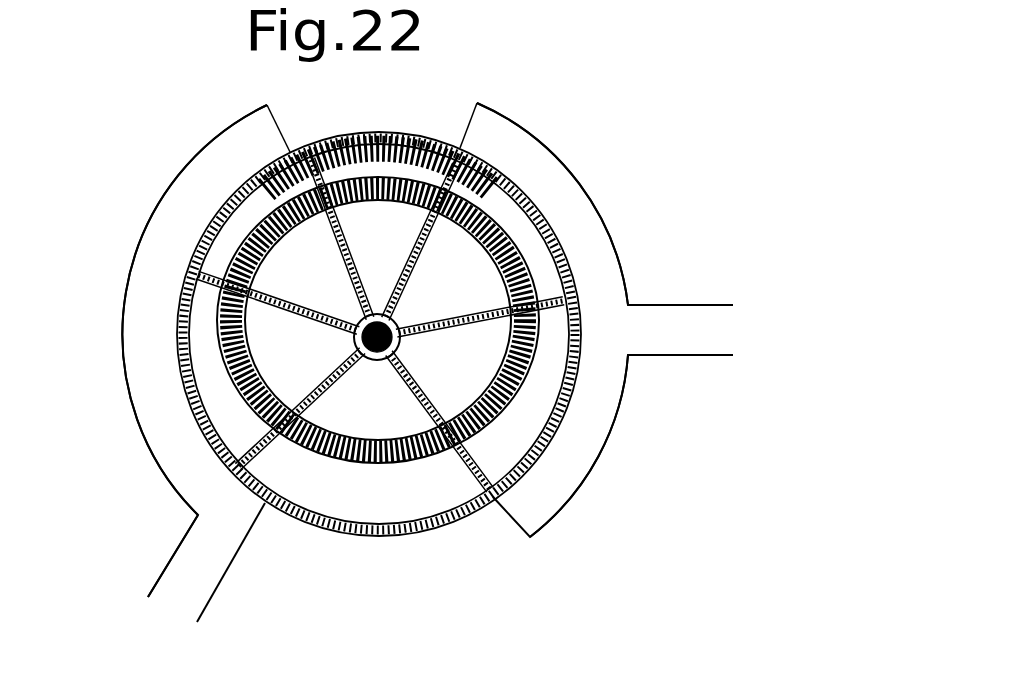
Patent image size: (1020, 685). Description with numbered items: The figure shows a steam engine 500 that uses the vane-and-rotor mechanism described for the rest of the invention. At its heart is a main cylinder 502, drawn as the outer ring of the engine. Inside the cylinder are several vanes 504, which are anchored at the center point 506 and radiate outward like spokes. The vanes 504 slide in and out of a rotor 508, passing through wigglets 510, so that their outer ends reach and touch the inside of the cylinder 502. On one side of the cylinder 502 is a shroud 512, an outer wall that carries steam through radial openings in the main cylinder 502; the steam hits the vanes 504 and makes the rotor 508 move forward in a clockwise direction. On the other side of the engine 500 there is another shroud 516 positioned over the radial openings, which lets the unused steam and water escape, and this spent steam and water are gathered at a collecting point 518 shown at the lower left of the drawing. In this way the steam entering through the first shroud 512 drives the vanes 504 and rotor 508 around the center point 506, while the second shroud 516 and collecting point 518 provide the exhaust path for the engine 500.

The steam engine 500 is at (575, 104).
The main cylinder 502 is at (407, 530).
The vanes 504 is at (354, 223).
The center point 506 is at (408, 309).
The rotor 508 is at (375, 462).
The wigglets 510 is at (260, 276).
The shroud 512 is at (594, 185).
The shroud 516 is at (108, 273).
The collecting point 518 is at (150, 608).